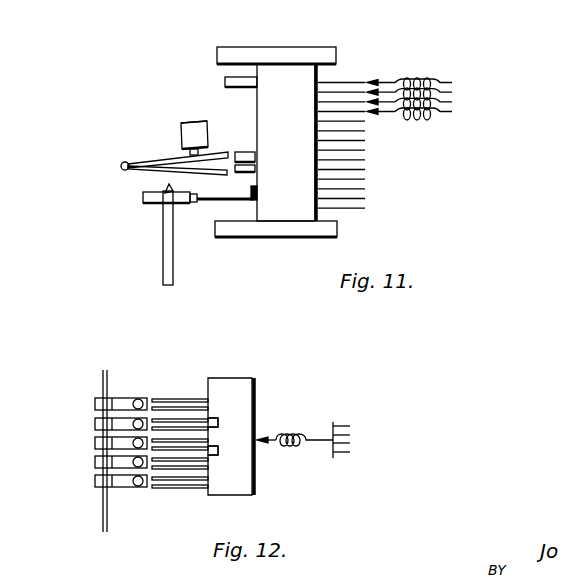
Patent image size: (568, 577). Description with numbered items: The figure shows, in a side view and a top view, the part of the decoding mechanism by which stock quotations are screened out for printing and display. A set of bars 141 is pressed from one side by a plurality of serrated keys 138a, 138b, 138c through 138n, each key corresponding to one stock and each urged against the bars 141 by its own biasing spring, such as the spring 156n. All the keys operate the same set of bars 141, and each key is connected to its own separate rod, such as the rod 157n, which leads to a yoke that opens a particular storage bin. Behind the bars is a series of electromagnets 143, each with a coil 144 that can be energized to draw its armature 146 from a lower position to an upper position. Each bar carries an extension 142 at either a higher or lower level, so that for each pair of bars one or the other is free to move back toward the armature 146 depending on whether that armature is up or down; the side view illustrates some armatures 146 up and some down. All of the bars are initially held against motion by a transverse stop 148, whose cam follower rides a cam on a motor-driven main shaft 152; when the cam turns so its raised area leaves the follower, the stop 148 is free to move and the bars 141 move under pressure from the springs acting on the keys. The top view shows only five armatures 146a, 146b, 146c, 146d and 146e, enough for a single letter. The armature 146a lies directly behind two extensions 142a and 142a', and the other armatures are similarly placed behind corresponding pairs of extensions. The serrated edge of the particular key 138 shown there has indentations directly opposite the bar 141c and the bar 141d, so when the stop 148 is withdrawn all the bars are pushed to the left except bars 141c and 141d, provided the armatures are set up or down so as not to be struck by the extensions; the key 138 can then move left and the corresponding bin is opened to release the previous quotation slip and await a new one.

In FIG. 11, the bars 141 is at (288, 63).
In FIG. 11, the rod 157n is at (226, 80).
In FIG. 11, the key 138n is at (343, 82).
In FIG. 11, the key 138c is at (364, 190).
In FIG. 11, the key 138b is at (363, 199).
In FIG. 11, the key 138a is at (361, 210).
In FIG. 11, the biasing spring 156n is at (431, 76).
In FIG. 11, the electromagnet 143 is at (181, 114).
In FIG. 11, the coil 144 is at (200, 131).
In FIG. 11, the armature 146 is at (206, 173).
In FIG. 11, the extension 142 is at (247, 154).
In FIG. 11, the main shaft 152 is at (165, 240).
In FIG. 11, the transverse stop 148 is at (210, 203).
In FIG. 12, the armature 146e is at (95, 402).
In FIG. 12, the armature 146d is at (95, 422).
In FIG. 12, the armature 146c is at (95, 441).
In FIG. 12, the armature 146b is at (95, 461).
In FIG. 12, the armature 146a is at (96, 484).
In FIG. 12, the extension 142a is at (161, 506).
In FIG. 12, the extension 142a' is at (183, 495).
In FIG. 12, the serrated key 138 is at (254, 480).
In FIG. 12, the bar 141d is at (208, 420).
In FIG. 12, the bar 141c is at (208, 448).